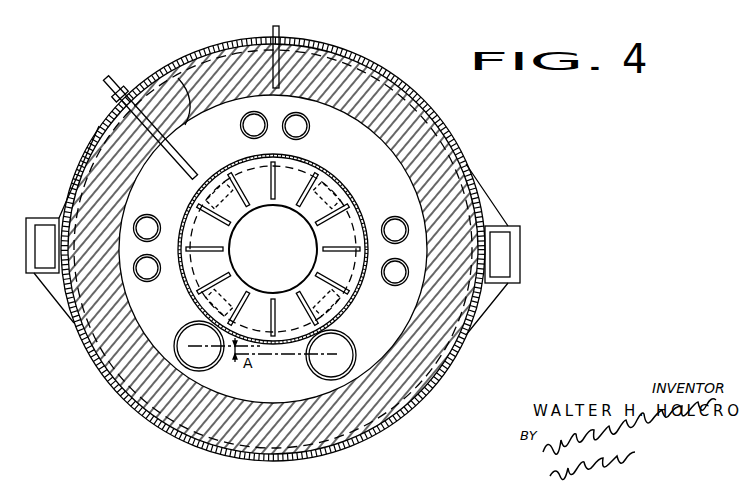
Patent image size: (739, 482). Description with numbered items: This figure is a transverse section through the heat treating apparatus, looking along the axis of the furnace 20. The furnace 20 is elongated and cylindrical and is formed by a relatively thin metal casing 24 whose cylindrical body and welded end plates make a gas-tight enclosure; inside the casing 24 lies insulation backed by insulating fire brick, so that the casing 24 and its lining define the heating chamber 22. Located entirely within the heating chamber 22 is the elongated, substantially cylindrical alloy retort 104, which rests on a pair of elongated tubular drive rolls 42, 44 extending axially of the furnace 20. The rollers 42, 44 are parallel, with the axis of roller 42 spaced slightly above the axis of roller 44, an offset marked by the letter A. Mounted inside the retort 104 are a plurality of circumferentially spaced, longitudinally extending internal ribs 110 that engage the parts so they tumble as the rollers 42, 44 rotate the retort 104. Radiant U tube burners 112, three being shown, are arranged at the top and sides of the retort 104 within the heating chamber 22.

The furnace 20 is at (437, 393).
The heating chamber 22 is at (178, 78).
The metal casing 24 is at (160, 429).
The drive roll 42 is at (222, 367).
The drive roll 44 is at (310, 368).
The alloy retort 104 is at (348, 300).
The internal ribs 110 is at (277, 185).
The radiant U tube burners 112 is at (240, 131).